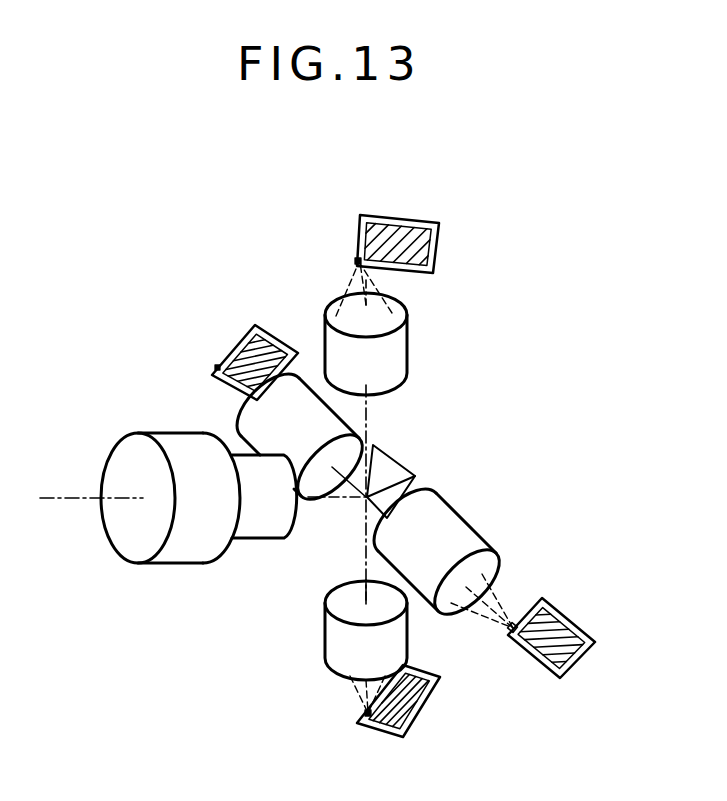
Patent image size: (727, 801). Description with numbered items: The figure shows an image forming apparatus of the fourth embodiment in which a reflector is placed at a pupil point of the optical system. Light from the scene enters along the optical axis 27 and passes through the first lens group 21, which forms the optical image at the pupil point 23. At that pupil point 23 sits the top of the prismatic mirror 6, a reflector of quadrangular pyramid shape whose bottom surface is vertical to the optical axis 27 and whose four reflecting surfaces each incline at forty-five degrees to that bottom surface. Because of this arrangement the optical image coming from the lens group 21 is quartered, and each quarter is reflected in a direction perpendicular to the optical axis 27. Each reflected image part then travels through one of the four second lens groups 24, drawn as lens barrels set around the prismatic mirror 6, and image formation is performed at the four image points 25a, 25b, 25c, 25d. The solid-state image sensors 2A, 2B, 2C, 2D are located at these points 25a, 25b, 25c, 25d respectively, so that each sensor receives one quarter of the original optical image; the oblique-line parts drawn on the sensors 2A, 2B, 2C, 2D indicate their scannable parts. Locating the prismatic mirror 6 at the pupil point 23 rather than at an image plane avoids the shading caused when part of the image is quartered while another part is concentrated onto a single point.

The first lens group 21 is at (173, 443).
The second lens group 24 is at (405, 342).
The prismatic mirror 6 is at (397, 463).
The pupil point 23 is at (363, 500).
The optical axis 27 is at (57, 500).
The solid-state image sensor 2A is at (257, 325).
The solid-state image sensor 2B is at (427, 697).
The solid-state image sensor 2C is at (427, 237).
The solid-state image sensor 2D is at (577, 660).
The image point 25a is at (360, 259).
The image point 25b is at (362, 715).
The image point 25c is at (218, 367).
The image point 25d is at (510, 638).